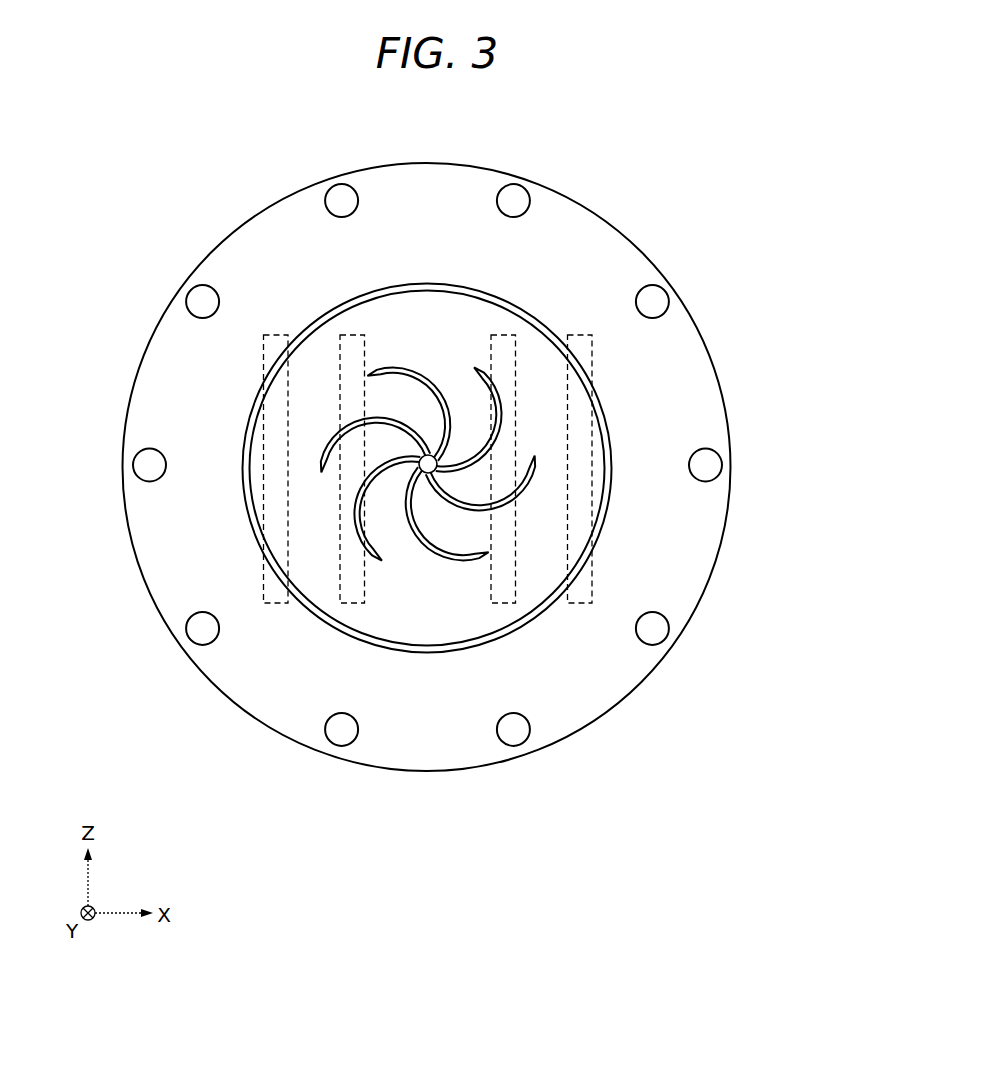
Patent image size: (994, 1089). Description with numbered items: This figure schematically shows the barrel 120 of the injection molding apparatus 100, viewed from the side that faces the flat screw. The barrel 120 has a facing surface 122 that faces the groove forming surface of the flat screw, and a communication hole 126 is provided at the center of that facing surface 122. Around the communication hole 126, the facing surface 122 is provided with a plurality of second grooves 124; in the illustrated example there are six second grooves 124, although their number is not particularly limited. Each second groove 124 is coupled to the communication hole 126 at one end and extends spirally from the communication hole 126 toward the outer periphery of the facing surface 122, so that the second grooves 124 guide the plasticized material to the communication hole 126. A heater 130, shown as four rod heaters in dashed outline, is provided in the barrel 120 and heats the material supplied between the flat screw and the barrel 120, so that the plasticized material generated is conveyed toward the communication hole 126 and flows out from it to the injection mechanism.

The processing apparatus 100 is at (748, 118).
The barrel 120 is at (686, 175).
The facing surface 122 is at (465, 634).
The second grooves 124 is at (415, 374).
The communication hole 126 is at (410, 474).
The heater 130 is at (277, 347).